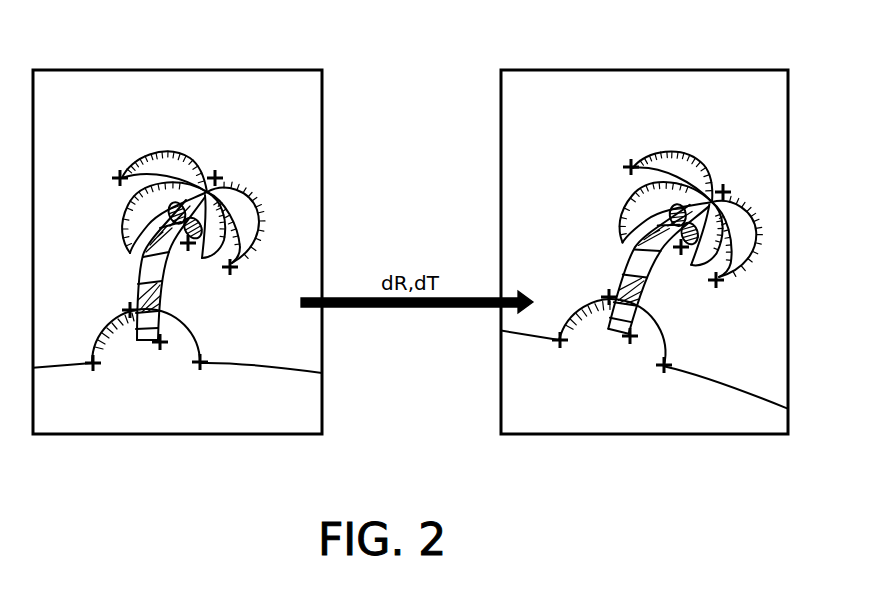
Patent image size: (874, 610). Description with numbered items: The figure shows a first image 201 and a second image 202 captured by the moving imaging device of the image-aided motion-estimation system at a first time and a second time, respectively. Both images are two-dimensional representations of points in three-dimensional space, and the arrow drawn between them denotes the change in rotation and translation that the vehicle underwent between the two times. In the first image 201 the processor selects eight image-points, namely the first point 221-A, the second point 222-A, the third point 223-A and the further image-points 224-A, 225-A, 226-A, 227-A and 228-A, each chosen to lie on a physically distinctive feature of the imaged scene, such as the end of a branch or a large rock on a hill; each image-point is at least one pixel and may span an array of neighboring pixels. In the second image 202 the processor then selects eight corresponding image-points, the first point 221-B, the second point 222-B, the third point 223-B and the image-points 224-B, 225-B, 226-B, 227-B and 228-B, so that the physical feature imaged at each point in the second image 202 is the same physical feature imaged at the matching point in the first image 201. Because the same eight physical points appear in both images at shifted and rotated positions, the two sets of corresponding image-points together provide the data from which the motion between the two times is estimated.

The first image 201 is at (98, 70).
The second image 202 is at (566, 70).
The first point 221-A is at (118, 178).
The second point 222-A is at (217, 178).
The third point 223-A is at (232, 267).
The image-point 224-A is at (188, 250).
The image-point 225-A is at (202, 363).
The image-point 226-A is at (160, 344).
The image-point 227-A is at (130, 308).
The image-point 228-A is at (92, 363).
The first point 221-B is at (630, 167).
The second point 222-B is at (725, 192).
The third point 223-B is at (717, 282).
The image-point 224-B is at (681, 249).
The image-point 225-B is at (665, 367).
The image-point 226-B is at (628, 337).
The image-point 227-B is at (609, 296).
The image-point 228-B is at (559, 340).